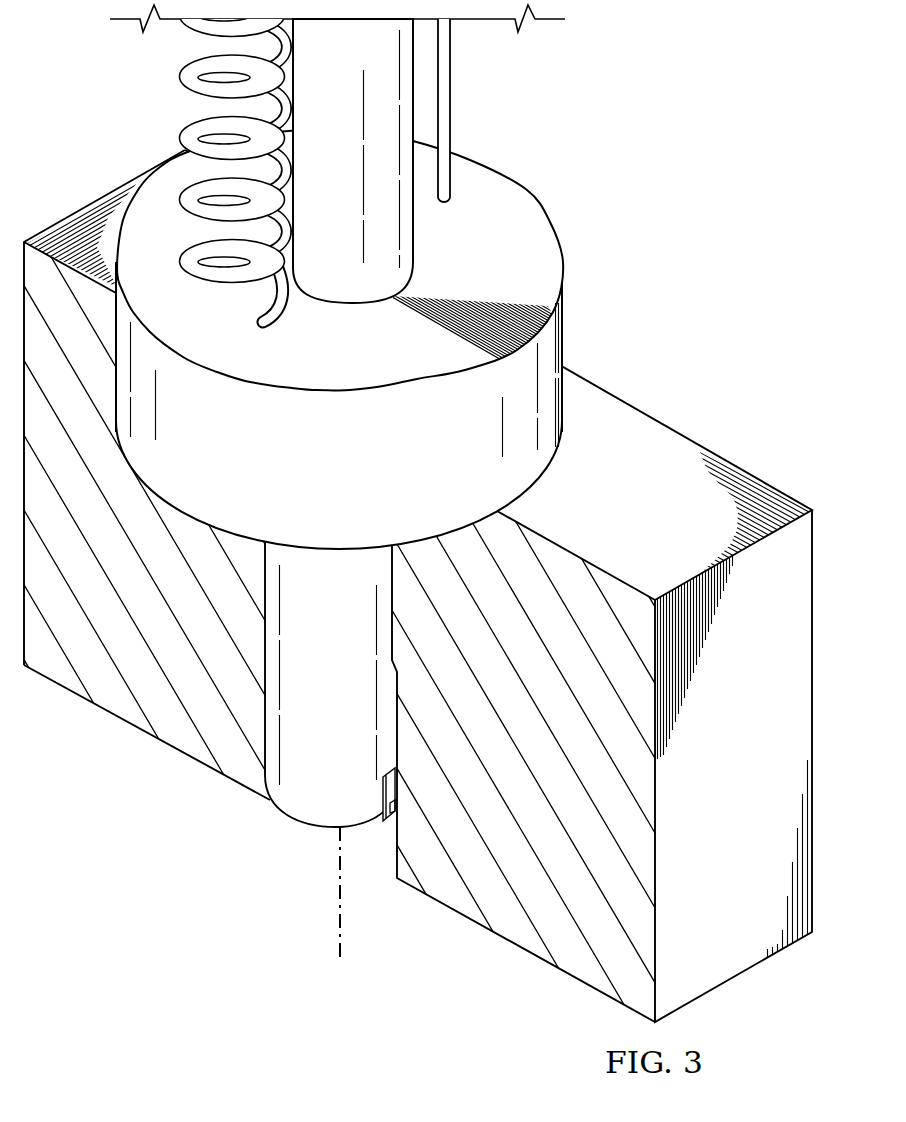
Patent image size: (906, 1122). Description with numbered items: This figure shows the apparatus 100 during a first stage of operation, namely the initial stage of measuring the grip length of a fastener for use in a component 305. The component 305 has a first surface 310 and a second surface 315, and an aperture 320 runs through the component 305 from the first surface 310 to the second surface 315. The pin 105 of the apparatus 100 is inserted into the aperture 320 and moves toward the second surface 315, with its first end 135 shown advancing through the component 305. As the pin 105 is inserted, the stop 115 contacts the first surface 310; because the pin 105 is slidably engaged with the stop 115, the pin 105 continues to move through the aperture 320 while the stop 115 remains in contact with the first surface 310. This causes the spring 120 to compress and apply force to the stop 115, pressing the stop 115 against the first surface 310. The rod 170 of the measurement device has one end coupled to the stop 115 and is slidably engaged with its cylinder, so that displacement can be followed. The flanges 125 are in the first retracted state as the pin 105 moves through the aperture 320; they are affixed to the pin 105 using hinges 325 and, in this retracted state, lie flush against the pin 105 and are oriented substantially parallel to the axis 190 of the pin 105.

The apparatus 100 is at (579, 146).
The pin 105 is at (414, 245).
The stop 115 is at (563, 345).
The spring 120 is at (183, 78).
The flanges 125 is at (382, 800).
The first end 135 is at (265, 660).
The rod 170 is at (452, 80).
The axis 190 is at (338, 893).
The component 305 is at (708, 975).
The first surface 310 is at (640, 430).
The second surface 315 is at (122, 722).
The aperture 320 is at (310, 841).
The hinges 325 is at (396, 810).